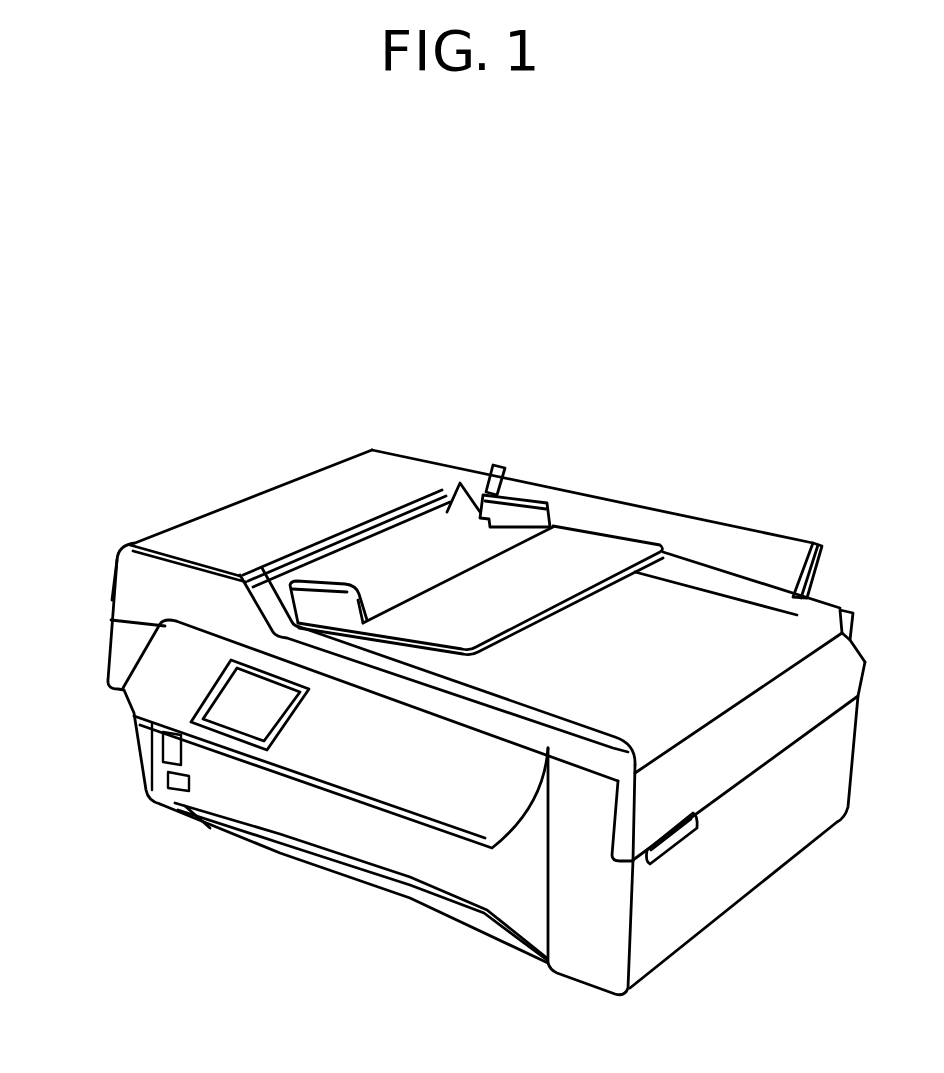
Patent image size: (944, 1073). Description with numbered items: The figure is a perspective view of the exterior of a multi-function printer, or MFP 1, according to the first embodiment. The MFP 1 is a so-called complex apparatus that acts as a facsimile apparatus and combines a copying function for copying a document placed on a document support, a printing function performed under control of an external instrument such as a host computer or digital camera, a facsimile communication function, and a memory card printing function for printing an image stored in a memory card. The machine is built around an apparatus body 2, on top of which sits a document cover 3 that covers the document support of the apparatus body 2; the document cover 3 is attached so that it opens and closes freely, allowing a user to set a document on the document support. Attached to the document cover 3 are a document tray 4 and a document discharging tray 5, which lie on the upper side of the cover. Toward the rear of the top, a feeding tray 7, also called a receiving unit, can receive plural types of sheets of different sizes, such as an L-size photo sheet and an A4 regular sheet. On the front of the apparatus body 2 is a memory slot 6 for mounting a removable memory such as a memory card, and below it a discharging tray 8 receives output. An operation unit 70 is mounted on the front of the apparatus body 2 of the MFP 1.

The multi-function printer 1 is at (824, 393).
The apparatus body 2 is at (108, 658).
The document cover 3 is at (113, 588).
The document tray 4 is at (405, 545).
The document discharging tray 5 is at (641, 644).
The memory slot 6 is at (178, 784).
The feeding tray 7 is at (668, 512).
The discharging tray 8 is at (453, 913).
The operation unit 70 is at (352, 758).